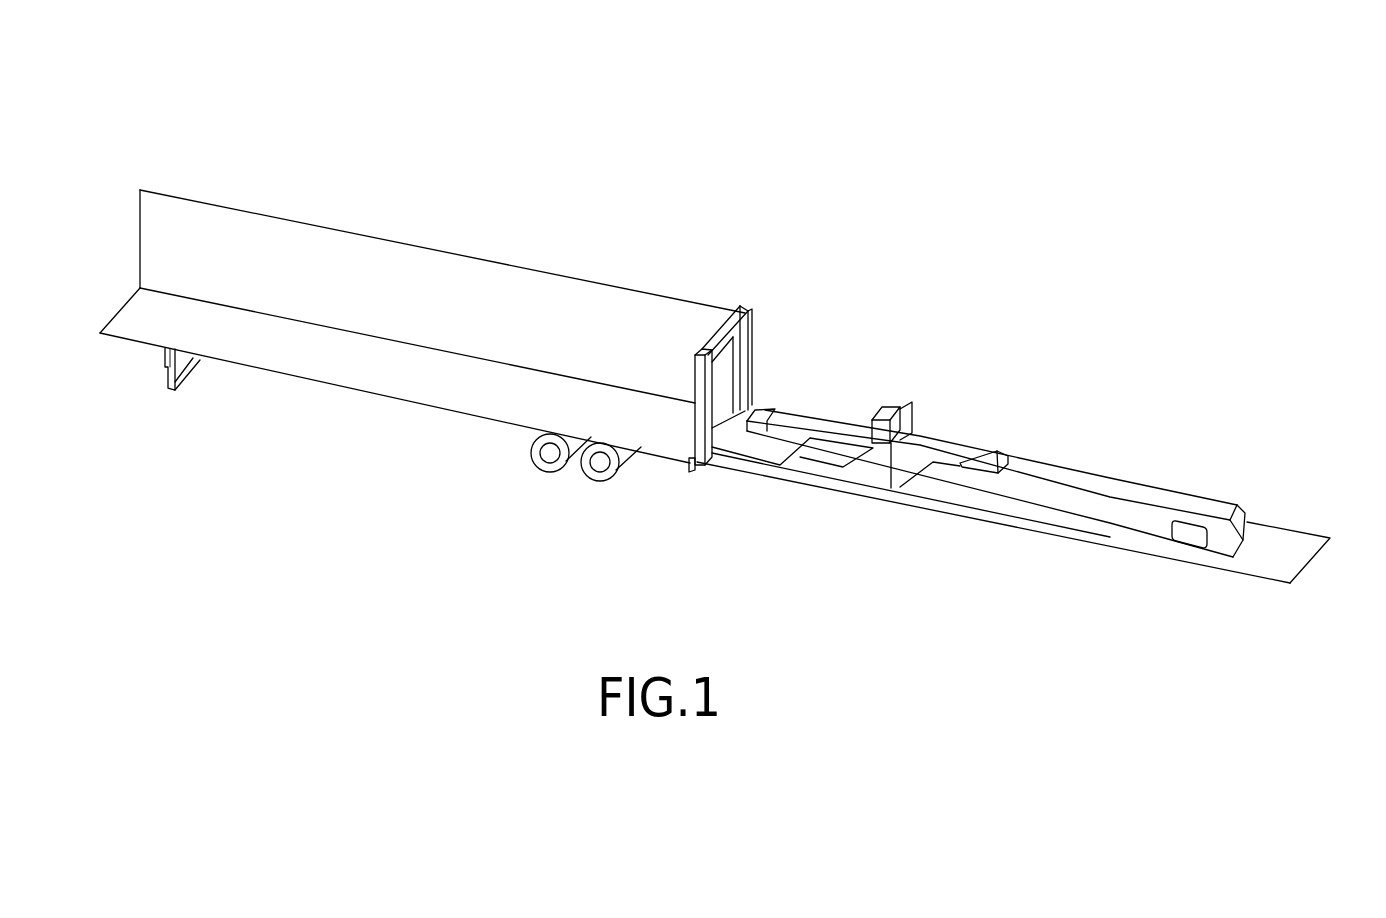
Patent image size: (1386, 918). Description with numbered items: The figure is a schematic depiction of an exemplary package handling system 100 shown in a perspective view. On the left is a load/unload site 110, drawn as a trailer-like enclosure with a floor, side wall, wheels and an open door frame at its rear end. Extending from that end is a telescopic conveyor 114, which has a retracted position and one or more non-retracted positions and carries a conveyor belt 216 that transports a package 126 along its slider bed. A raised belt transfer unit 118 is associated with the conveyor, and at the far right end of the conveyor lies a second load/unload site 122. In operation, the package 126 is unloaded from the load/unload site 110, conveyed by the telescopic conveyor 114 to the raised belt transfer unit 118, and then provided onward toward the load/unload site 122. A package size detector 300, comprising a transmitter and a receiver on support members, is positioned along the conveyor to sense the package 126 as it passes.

The package handling system 100 is at (937, 136).
The load/unload site 110 is at (289, 175).
The telescopic conveyor 114 is at (962, 522).
The raised belt transfer unit 118 is at (1003, 420).
The load/unload site 122 is at (1290, 525).
The package 126 is at (855, 438).
The conveyor belt 216 is at (1148, 493).
The package size detector 300 is at (928, 388).